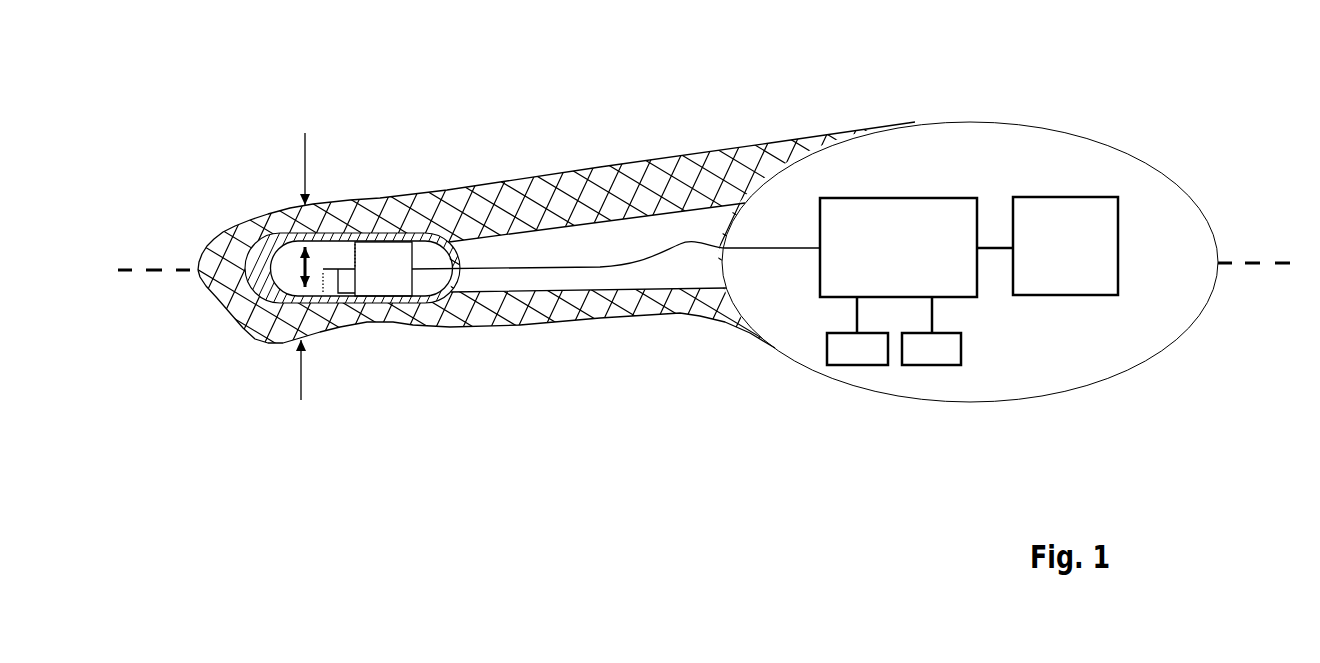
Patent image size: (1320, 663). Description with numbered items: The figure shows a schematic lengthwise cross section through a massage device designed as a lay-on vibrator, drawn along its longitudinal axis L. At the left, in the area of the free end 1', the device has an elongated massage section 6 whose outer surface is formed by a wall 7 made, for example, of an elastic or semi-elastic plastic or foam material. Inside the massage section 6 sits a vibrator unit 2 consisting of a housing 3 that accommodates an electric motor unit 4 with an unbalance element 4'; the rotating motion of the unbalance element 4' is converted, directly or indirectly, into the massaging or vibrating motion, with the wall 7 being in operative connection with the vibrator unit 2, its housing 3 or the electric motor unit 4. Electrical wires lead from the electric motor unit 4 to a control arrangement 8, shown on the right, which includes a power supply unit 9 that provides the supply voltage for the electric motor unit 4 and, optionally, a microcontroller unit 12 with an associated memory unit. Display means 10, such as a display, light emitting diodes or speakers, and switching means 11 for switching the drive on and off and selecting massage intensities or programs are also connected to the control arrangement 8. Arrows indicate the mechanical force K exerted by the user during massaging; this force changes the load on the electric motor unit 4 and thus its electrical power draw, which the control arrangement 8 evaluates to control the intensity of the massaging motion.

The free end 1' is at (704, 331).
The vibrator unit 2 is at (388, 338).
The housing 3 is at (427, 242).
The electric motor unit 4 is at (367, 338).
The unbalance element 4' is at (338, 217).
The massage section 6 is at (243, 370).
The wall 7 is at (273, 235).
The control arrangement 8 is at (903, 175).
The power supply unit 9 is at (1057, 196).
The display means 10 is at (858, 365).
The switching means 11 is at (932, 365).
The microcontroller unit 12 is at (947, 198).
The mechanical force K is at (302, 268).
The longitudinal axis L is at (704, 284).